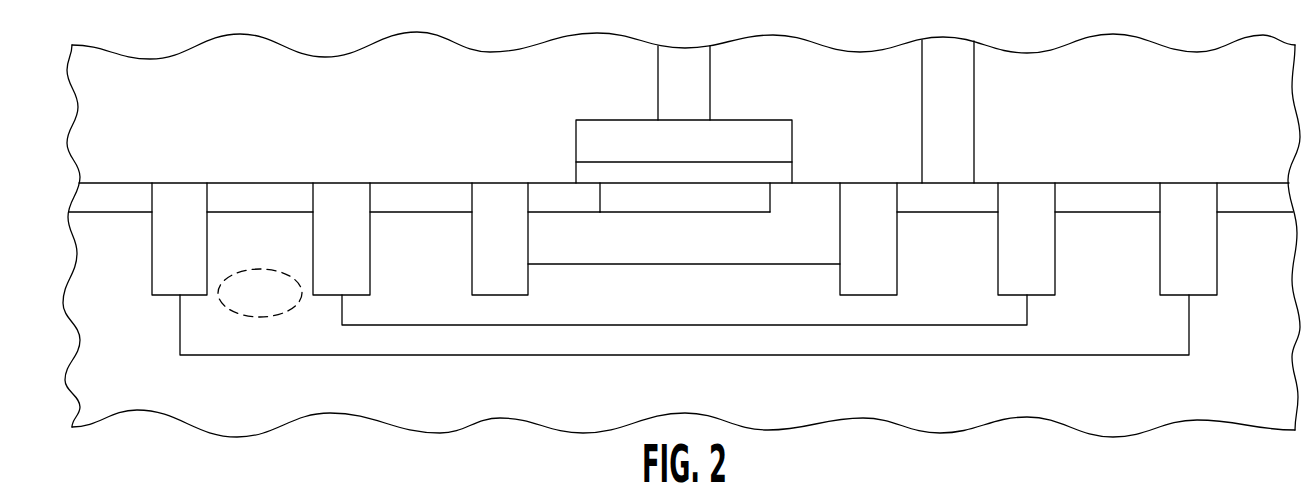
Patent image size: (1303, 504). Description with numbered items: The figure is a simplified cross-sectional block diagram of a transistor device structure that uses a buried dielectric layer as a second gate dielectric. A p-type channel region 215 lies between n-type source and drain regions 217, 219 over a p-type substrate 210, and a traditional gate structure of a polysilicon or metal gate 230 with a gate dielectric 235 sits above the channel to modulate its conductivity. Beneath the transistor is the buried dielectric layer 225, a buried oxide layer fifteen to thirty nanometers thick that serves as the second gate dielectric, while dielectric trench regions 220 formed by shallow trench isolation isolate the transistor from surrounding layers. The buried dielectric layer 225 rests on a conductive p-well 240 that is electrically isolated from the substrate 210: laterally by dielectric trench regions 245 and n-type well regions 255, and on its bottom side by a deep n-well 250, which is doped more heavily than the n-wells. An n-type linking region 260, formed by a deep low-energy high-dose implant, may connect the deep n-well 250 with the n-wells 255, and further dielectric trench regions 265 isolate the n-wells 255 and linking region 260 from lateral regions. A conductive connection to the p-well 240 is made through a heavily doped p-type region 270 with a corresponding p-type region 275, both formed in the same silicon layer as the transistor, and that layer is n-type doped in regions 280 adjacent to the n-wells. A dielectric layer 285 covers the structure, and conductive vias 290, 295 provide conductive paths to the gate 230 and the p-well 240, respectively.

The substrate 210 is at (1253, 394).
The channel region 215 is at (638, 202).
The source region 217 is at (548, 192).
The drain region 219 is at (803, 202).
The dielectric trench regions 220 is at (515, 256).
The buried dielectric layer 225 is at (730, 252).
The gate 230 is at (698, 156).
The gate dielectric 235 is at (785, 175).
The p-well 240 is at (701, 306).
The dielectric trench regions 245 is at (357, 258).
The deep n-well 250 is at (937, 345).
The n-type well regions 255 is at (275, 246).
The linking region 260 is at (270, 305).
The dielectric trench regions 265 is at (194, 254).
The p-type region 270 is at (949, 203).
The p-type region 275 is at (418, 192).
The n-type regions 280 is at (258, 192).
The dielectric layer 285 is at (1255, 104).
The conductive via 290 is at (698, 94).
The conductive via 295 is at (963, 132).